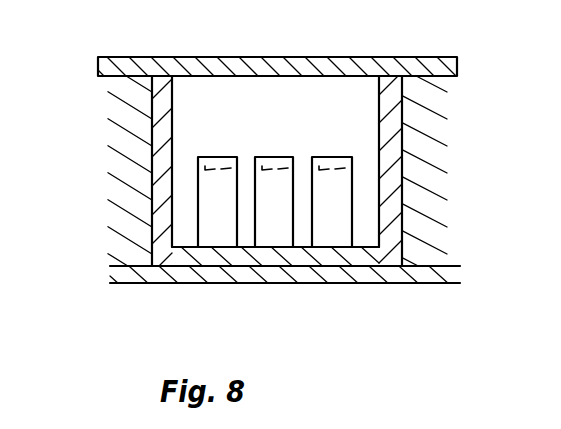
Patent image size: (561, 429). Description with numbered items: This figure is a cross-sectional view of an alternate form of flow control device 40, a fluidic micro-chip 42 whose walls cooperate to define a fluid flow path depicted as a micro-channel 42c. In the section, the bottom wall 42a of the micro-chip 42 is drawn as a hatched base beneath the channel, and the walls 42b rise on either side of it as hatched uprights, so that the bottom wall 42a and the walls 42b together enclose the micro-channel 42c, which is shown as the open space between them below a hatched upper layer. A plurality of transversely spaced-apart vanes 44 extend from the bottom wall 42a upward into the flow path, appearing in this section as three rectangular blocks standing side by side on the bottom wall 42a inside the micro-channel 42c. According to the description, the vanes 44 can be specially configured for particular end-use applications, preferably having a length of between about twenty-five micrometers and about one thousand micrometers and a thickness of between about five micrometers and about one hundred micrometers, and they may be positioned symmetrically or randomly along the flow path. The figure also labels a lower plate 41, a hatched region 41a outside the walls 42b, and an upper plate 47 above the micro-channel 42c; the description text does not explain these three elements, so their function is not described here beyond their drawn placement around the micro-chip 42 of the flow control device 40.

The flow control device 40 is at (196, 41).
The base plate 41 is at (160, 293).
The insulating layer 41a is at (120, 162).
The fluidic micro-chip 42 is at (152, 103).
The bottom wall 42a is at (291, 265).
The walls 42b is at (172, 115).
The micro-channel 42c is at (297, 92).
The vanes 44 is at (320, 155).
The cover plate 47 is at (387, 66).